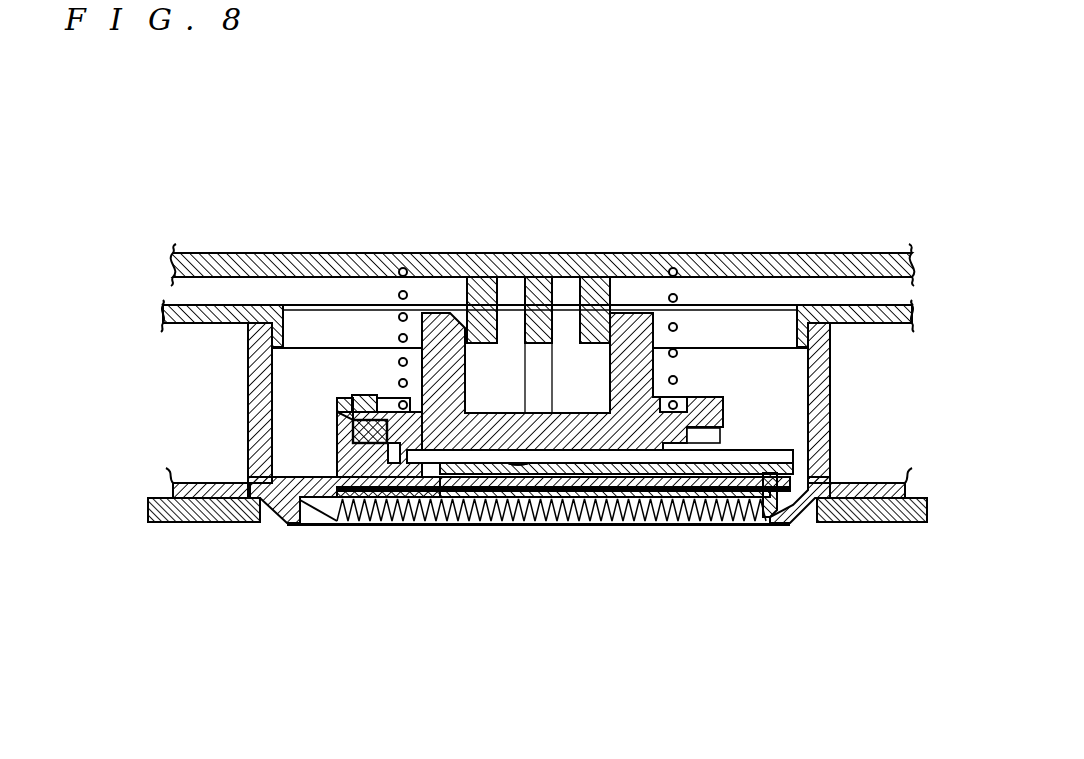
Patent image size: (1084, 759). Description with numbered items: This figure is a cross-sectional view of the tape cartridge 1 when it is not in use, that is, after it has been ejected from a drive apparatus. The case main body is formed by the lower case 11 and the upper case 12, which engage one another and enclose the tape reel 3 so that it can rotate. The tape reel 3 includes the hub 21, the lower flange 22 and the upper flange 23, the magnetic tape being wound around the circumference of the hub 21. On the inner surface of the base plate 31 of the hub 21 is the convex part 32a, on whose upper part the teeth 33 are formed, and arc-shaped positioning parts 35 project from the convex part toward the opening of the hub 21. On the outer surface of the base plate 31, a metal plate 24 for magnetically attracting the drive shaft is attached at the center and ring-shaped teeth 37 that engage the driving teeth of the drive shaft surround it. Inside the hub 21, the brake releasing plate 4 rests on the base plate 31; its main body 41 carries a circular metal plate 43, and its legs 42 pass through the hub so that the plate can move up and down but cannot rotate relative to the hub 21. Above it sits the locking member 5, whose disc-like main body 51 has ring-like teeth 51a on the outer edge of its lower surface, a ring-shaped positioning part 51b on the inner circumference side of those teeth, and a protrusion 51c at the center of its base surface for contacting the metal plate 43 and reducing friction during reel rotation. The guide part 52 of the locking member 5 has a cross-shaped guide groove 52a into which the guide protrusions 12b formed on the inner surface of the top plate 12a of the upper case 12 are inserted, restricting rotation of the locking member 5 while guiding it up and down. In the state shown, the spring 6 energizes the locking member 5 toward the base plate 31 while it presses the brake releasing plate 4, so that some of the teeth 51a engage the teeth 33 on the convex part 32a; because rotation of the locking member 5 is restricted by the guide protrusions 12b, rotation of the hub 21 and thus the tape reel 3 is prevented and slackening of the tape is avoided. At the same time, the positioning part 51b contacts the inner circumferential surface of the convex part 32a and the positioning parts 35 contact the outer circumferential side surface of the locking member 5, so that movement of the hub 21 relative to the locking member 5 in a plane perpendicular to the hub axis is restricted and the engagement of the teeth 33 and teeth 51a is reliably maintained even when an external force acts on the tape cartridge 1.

The tape cartridge 1 is at (518, 177).
The tape reel 3 is at (226, 401).
The brake releasing plate 4 is at (760, 456).
The locking member 5 is at (394, 346).
The spring 6 is at (398, 294).
The lower case 11 is at (216, 524).
The upper case 12 is at (803, 249).
The top plate 12a is at (720, 254).
The guide protrusions 12b is at (552, 293).
The hub 21 is at (832, 404).
The lower flange 22 is at (214, 483).
The upper flange 23 is at (200, 325).
The metal plate 24 is at (545, 505).
The base plate 31 is at (424, 520).
The convex part 32a is at (360, 468).
The teeth 33 is at (353, 433).
The positioning parts 35 is at (337, 406).
The ring-shaped teeth 37 is at (496, 510).
The main body 41 is at (641, 505).
The legs 42 is at (765, 517).
The metal plate 43 is at (578, 500).
The main body 51 is at (722, 409).
The teeth 51a is at (345, 400).
The positioning part 51b is at (385, 411).
The protrusion 51c is at (520, 464).
The guide part 52 is at (656, 372).
The guide groove 52a is at (512, 336).